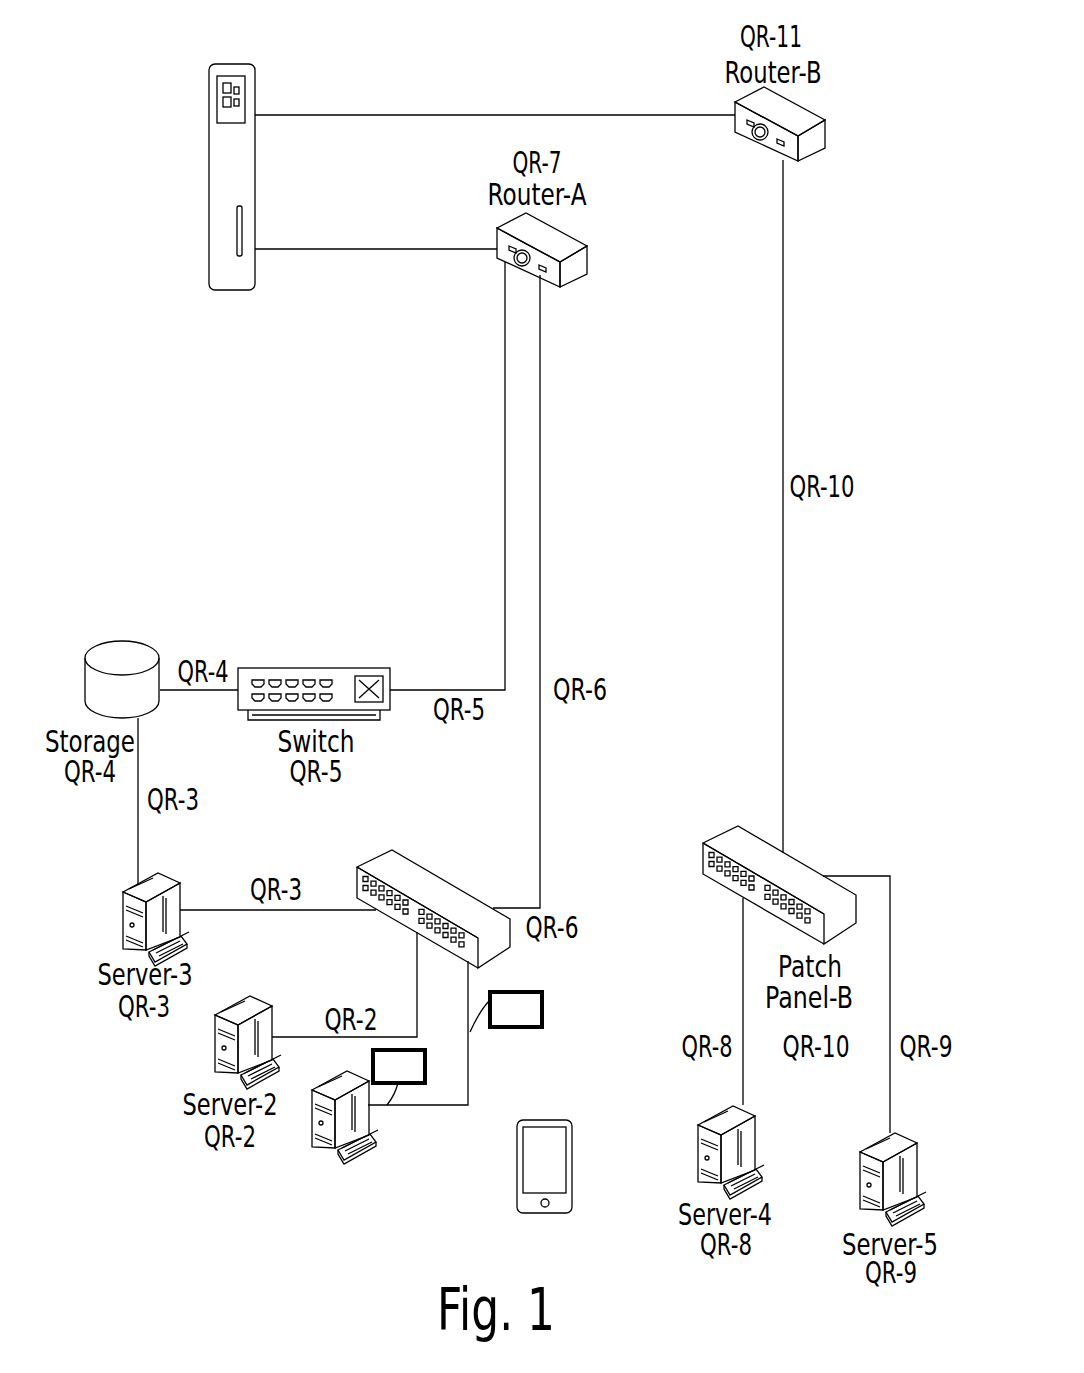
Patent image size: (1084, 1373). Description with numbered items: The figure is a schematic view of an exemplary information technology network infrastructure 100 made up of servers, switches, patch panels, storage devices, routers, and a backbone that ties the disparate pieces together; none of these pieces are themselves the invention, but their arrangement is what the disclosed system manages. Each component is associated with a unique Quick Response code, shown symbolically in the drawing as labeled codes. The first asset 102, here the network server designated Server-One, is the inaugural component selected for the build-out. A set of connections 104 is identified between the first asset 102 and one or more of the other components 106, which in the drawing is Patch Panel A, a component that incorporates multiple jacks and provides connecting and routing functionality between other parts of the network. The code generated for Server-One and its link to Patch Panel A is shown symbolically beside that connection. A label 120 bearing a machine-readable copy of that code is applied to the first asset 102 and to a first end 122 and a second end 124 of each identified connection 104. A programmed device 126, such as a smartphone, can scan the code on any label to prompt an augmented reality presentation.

The information technology network infrastructure 100 is at (393, 72).
The first asset 102 is at (293, 1230).
The connections 104 is at (474, 1097).
The component 106 is at (509, 959).
The label 120 is at (237, 997).
The first end 122 is at (389, 1109).
The second end 124 is at (474, 1039).
The programmed device 126 is at (527, 1168).